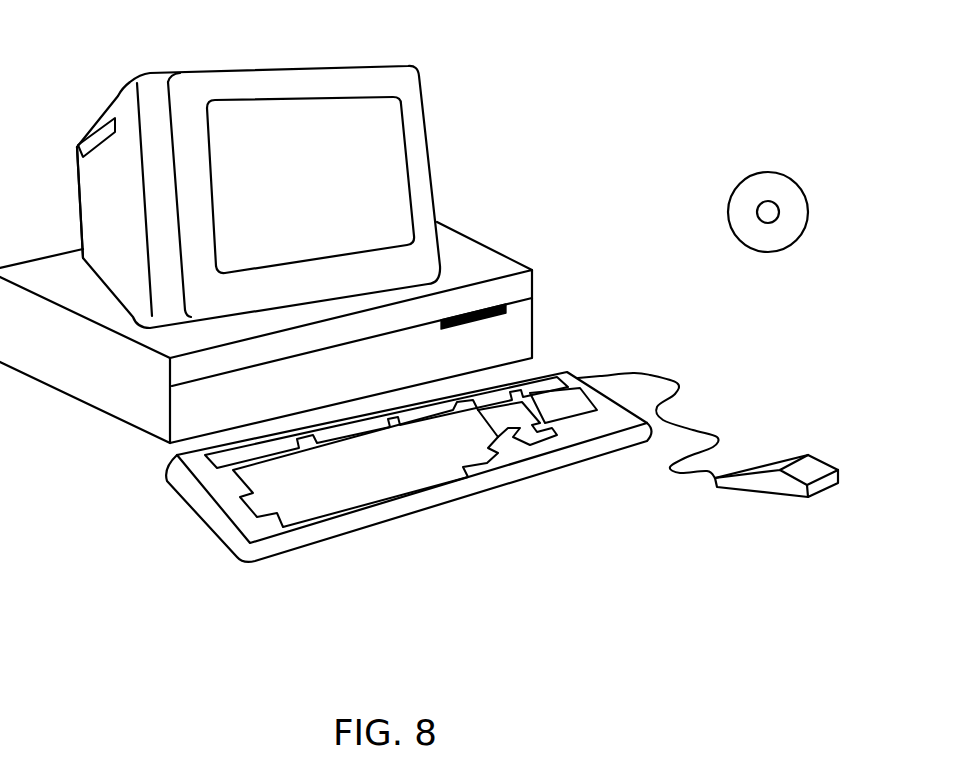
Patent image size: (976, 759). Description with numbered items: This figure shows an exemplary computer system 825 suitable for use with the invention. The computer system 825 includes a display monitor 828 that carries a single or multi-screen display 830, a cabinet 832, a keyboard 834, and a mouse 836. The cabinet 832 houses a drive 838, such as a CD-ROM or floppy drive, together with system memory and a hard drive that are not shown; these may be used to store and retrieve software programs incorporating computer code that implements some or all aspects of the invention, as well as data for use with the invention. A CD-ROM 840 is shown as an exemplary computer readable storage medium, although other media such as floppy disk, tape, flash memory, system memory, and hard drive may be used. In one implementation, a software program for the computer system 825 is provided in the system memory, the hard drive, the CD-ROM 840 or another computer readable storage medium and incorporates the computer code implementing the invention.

The computer system 825 is at (672, 56).
The display monitor 828 is at (435, 193).
The display 830 is at (387, 140).
The cabinet 832 is at (117, 425).
The keyboard 834 is at (417, 513).
The mouse 836 is at (825, 460).
The drive 838 is at (502, 305).
The CD-ROM 840 is at (788, 177).